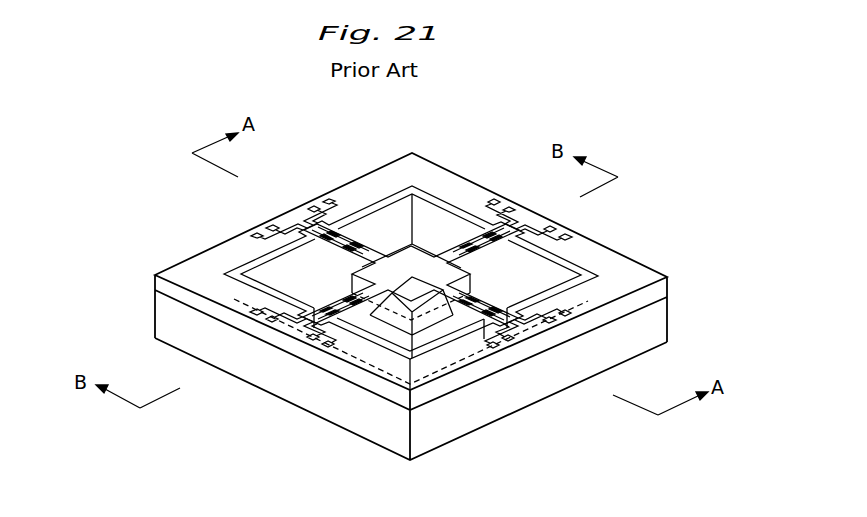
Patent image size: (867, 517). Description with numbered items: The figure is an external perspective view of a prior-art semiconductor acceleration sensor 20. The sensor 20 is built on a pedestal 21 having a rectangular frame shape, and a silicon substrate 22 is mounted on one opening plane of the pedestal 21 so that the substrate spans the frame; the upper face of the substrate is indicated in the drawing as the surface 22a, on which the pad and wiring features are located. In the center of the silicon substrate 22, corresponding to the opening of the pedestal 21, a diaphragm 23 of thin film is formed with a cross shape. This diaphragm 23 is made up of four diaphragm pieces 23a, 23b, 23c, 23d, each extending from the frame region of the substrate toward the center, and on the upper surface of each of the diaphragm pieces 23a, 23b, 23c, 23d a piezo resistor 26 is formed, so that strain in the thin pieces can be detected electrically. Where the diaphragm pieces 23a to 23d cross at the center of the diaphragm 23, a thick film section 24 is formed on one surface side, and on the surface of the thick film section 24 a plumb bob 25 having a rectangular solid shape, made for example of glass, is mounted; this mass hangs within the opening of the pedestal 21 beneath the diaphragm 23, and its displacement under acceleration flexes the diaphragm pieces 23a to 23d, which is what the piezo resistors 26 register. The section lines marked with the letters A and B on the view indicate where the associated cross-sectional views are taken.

The semiconductor acceleration sensor 20 is at (148, 151).
The pedestal 21 is at (655, 332).
The silicon substrate 22 is at (200, 270).
The frame upper surface 22a is at (267, 322).
The diaphragm 23 is at (383, 310).
The diaphragm piece 23a is at (520, 340).
The diaphragm piece 23b is at (314, 222).
The diaphragm piece 23c is at (498, 228).
The diaphragm piece 23d is at (300, 315).
The thick film section 24 is at (472, 282).
The plumb bob 25 is at (363, 333).
The piezo resistor 26 is at (363, 254).